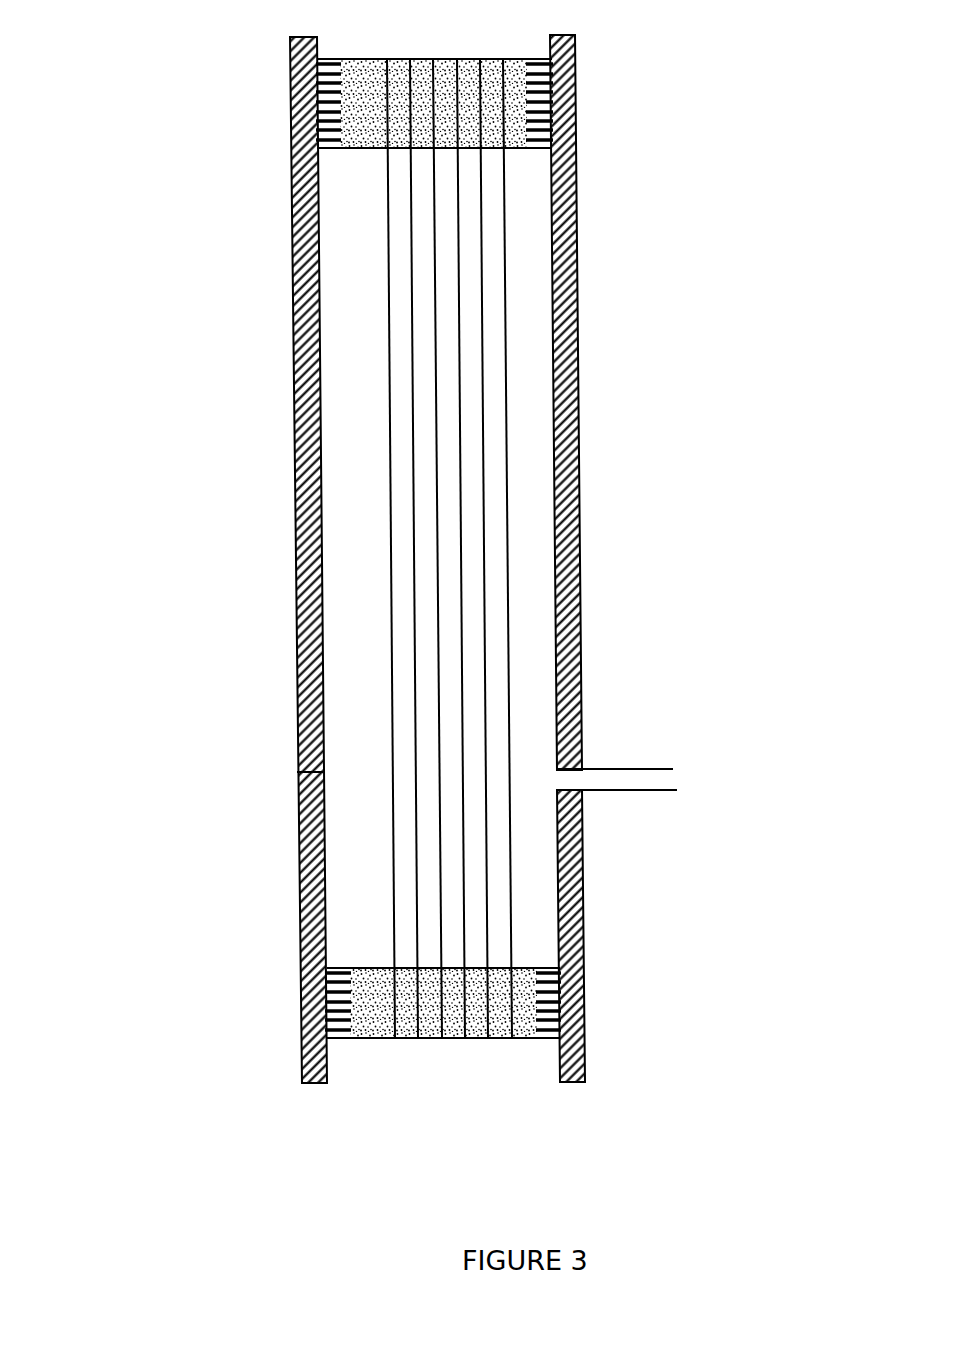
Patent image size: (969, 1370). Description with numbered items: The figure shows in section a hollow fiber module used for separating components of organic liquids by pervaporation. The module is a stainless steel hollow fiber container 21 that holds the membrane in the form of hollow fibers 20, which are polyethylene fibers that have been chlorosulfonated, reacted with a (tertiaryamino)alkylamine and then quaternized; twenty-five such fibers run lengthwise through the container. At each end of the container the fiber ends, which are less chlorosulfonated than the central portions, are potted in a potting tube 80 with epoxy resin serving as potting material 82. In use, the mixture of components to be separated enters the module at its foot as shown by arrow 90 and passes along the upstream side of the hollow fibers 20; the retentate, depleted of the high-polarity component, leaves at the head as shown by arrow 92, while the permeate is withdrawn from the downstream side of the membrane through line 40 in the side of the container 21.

The hollow fibers 20 is at (487, 302).
The hollow fiber container 21 is at (297, 412).
The line 40 is at (840, 768).
The potting tube 80 is at (535, 98).
The potting material 82 is at (357, 127).
The arrow 90 is at (444, 1103).
The arrow 92 is at (432, 2).